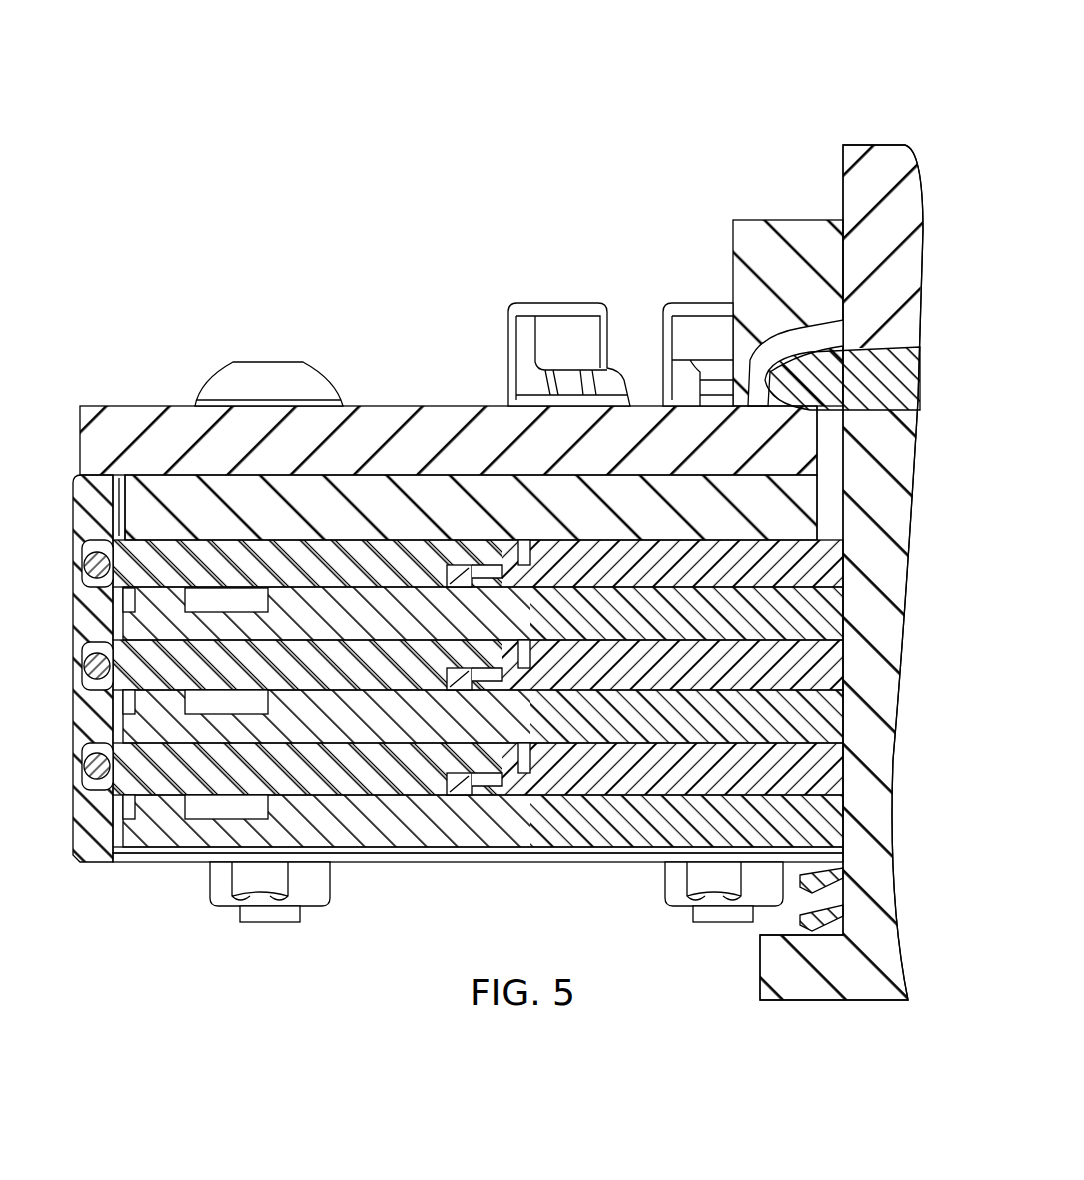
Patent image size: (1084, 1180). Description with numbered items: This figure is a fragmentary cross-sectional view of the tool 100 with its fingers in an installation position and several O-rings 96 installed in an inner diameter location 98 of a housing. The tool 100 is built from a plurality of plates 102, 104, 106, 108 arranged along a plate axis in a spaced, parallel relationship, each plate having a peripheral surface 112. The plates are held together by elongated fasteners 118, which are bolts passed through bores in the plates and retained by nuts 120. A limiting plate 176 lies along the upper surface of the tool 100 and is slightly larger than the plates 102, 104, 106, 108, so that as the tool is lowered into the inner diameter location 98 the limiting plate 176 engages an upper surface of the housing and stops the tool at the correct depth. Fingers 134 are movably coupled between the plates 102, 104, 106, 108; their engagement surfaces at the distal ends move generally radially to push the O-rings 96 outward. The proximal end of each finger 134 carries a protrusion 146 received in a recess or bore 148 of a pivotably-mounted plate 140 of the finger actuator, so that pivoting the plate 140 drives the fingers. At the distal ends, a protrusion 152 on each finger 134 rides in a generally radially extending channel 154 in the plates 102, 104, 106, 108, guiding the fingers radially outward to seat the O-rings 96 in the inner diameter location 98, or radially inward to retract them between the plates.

The tool 100 is at (816, 92).
The limiting plate 176 is at (80, 412).
The plate 102 is at (808, 496).
The protrusion 152 is at (143, 600).
The elongated fastener 118 is at (268, 378).
The pivotably-mounted plate 140 is at (835, 567).
The plate 104 is at (808, 618).
The plate 106 is at (808, 718).
The plate 108 is at (808, 822).
The finger 134 is at (118, 572).
The O-ring 96 is at (100, 766).
The inner diameter location 98 is at (80, 875).
The channel 154 is at (210, 808).
The peripheral surface 112 is at (100, 862).
The nut 120 is at (312, 890).
The protrusion 146 is at (490, 785).
The recess or bore 148 is at (492, 680).